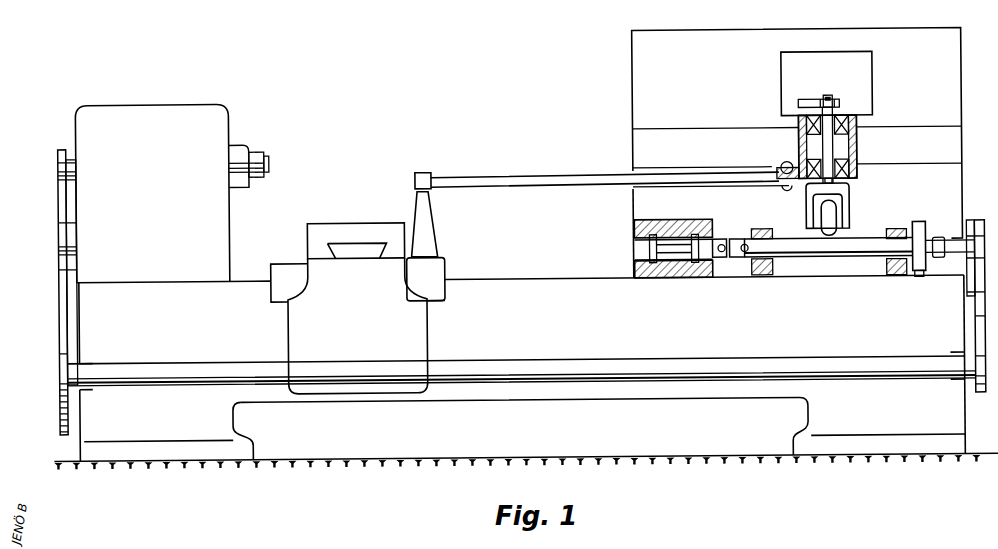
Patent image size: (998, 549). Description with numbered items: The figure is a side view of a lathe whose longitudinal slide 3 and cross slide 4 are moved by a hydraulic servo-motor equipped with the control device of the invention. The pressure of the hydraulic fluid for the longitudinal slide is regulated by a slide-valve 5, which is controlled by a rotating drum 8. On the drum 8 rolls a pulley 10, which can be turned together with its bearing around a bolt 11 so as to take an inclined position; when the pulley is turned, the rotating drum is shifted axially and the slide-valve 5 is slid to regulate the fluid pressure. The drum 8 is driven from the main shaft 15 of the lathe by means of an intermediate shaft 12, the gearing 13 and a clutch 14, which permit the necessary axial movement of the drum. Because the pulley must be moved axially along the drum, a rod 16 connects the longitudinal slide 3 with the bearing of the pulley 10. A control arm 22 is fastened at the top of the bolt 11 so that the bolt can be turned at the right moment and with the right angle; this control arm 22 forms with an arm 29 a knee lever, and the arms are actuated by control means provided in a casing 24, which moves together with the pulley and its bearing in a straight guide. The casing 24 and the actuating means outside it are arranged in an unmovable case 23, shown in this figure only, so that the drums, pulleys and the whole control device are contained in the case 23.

The longitudinal slide 3 is at (359, 377).
The cross slide 4 is at (352, 236).
The slide-valve 5 is at (677, 271).
The rotating drum 8 is at (837, 253).
The pulley 10 is at (830, 210).
The bolt 11 is at (835, 155).
The intermediate shaft 12 is at (670, 371).
The gearing 13 is at (65, 329).
The clutch 14 is at (920, 273).
The main shaft 15 is at (268, 161).
The rod 16 is at (472, 177).
The control arm 22 is at (840, 105).
The case 23 is at (634, 89).
The casing 24 is at (875, 61).
The arm 29 is at (808, 103).